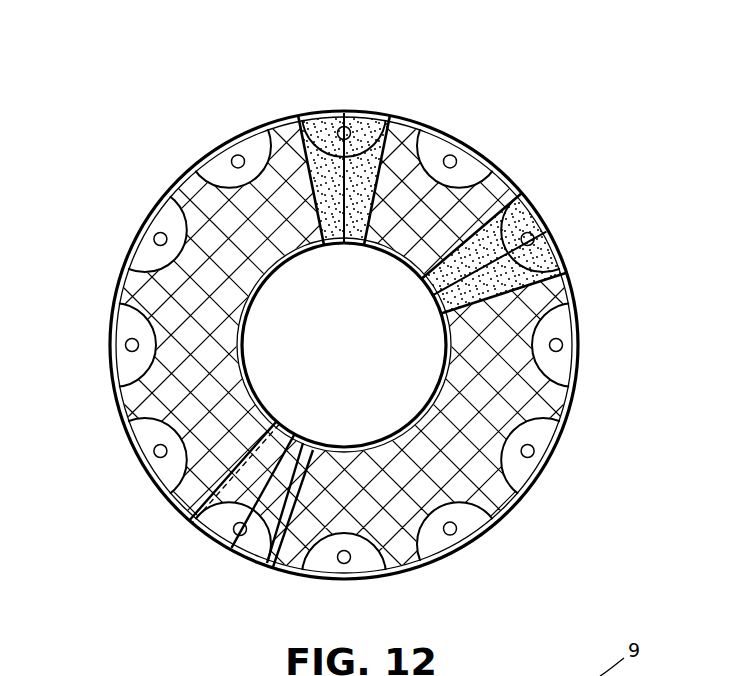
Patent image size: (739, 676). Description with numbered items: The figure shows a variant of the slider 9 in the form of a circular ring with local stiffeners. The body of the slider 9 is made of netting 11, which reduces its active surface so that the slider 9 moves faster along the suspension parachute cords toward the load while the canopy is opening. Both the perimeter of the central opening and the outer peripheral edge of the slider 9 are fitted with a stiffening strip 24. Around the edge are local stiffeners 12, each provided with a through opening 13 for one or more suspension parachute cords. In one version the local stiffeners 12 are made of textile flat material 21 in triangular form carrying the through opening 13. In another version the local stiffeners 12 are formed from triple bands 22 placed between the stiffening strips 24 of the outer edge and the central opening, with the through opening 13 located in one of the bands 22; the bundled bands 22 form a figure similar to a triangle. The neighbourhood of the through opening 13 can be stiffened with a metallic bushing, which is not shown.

The slider 9 is at (346, 99).
The netting 11 is at (143, 405).
The local stiffeners 12 is at (548, 436).
The through opening 13 is at (150, 239).
The textile flat material 21 is at (303, 141).
The bands 22 is at (212, 541).
The stiffening strip 24 is at (162, 187).